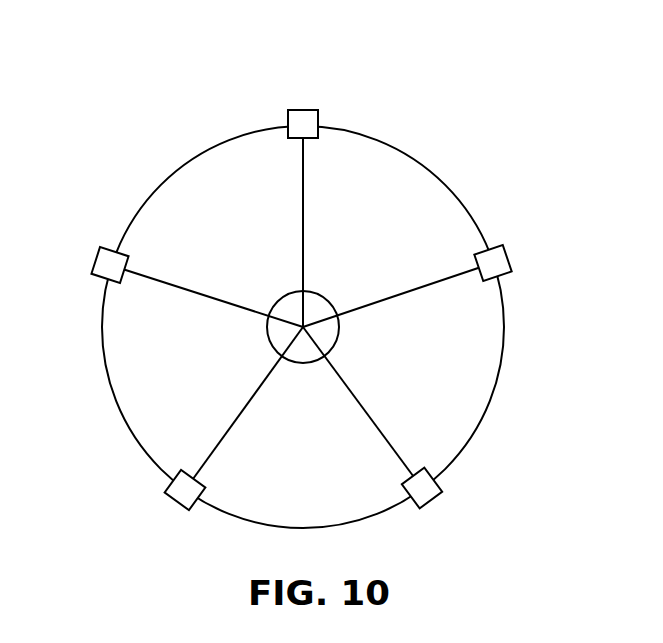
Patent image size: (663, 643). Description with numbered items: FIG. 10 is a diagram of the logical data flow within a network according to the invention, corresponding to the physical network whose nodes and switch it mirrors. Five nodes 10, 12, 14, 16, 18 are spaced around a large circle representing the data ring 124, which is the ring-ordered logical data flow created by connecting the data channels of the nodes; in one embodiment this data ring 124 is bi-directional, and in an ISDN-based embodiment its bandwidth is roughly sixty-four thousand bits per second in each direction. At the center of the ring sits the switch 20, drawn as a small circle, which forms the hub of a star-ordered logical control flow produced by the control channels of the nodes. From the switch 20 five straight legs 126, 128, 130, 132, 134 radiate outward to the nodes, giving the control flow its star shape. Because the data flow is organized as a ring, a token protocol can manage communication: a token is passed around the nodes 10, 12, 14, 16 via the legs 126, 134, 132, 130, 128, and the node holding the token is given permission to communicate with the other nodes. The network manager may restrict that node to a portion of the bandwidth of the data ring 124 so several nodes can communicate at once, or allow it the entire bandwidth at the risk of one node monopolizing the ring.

The node 10 is at (103, 226).
The node 12 is at (223, 536).
The node 14 is at (497, 521).
The node 16 is at (585, 241).
The node 18 is at (341, 44).
The switch 20 is at (393, 226).
The data ring 124 is at (190, 153).
The leg 126 is at (200, 293).
The leg 128 is at (245, 410).
The leg 130 is at (372, 424).
The leg 132 is at (423, 290).
The leg 134 is at (305, 193).